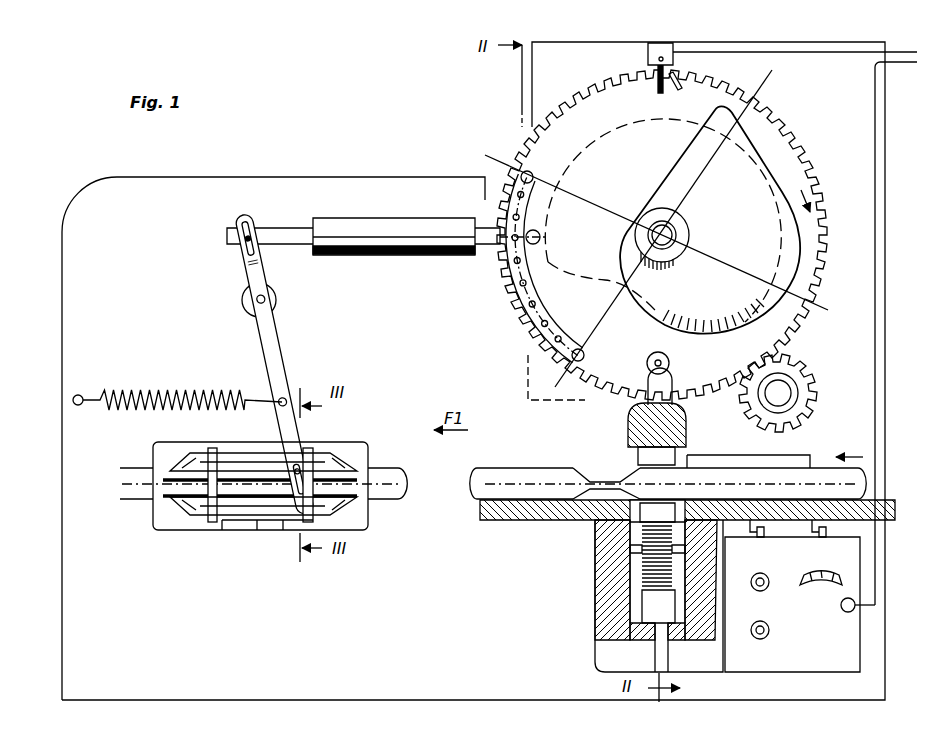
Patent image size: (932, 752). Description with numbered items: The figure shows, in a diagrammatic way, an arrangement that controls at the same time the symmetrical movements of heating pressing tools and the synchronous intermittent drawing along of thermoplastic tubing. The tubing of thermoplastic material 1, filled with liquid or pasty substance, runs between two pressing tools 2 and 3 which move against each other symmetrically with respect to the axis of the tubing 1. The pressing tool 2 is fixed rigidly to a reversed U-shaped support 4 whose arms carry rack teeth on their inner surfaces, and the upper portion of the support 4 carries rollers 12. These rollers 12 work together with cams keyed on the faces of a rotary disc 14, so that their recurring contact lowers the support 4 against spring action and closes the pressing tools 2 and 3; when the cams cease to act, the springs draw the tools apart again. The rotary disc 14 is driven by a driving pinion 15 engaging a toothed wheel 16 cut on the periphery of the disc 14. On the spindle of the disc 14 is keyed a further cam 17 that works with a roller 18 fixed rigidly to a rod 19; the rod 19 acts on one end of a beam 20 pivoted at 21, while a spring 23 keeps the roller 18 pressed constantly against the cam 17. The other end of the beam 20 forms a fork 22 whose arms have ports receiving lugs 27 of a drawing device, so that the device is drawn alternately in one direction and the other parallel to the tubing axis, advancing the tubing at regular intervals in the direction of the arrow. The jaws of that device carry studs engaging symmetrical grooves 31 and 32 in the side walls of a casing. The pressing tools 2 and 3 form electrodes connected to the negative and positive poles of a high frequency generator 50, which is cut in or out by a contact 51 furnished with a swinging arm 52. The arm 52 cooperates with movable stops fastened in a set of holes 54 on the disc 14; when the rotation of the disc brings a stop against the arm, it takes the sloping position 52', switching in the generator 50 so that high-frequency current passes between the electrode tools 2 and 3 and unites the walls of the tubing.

The tubing of thermoplastic material 1 is at (866, 484).
The pressing tool 2 is at (638, 456).
The pressing tool 3 is at (656, 509).
The reversed U-shaped support 4 is at (684, 432).
The roller 12 is at (669, 361).
The rotary disc 14 is at (796, 140).
The driving pinion 15 is at (802, 383).
The toothed wheel 16 is at (792, 323).
The cam 17 is at (590, 150).
The roller 18 is at (505, 278).
The rod 19 is at (287, 228).
The beam 20 is at (265, 337).
The pivot 21 is at (276, 298).
The fork 22 is at (293, 441).
The spring 23 is at (160, 391).
The lug 27 is at (288, 463).
The groove 31 is at (182, 464).
The groove 32 is at (196, 512).
The high frequency generator 50 is at (850, 651).
The contact 51 is at (648, 56).
The swinging arm 52 is at (641, 84).
The sloping position of swinging arm 52' is at (704, 73).
The holes 54 is at (525, 306).